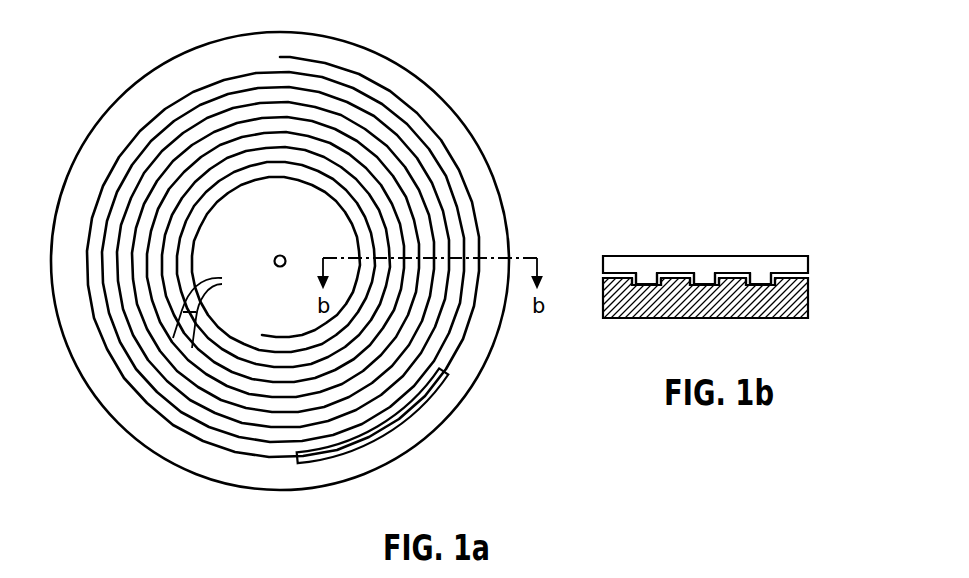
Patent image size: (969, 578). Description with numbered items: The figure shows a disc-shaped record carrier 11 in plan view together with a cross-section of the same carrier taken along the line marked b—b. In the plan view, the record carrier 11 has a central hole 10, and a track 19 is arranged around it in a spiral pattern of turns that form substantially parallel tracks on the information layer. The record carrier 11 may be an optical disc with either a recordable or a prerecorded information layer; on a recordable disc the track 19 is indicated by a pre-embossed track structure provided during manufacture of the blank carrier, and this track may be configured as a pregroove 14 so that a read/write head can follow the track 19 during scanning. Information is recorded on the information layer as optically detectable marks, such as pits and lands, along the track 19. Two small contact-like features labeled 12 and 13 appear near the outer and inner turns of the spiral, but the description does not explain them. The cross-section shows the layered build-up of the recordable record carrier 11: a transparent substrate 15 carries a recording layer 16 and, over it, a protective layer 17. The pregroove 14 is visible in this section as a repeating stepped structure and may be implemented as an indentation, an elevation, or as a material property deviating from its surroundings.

In FIG. 1a, the central hole 10 is at (278, 255).
In FIG. 1a, the record carrier 11 is at (483, 93).
In FIG. 1b, the record carrier 11 is at (605, 231).
In FIG. 1a, the outer terminal contact 12 is at (300, 464).
In FIG. 1a, the inner terminal contact 13 is at (211, 308).
In FIG. 1b, the pregroove 14 is at (702, 288).
In FIG. 1b, the transparent substrate 15 is at (625, 318).
In FIG. 1b, the recording layer 16 is at (784, 270).
In FIG. 1b, the protective layer 17 is at (696, 256).
In FIG. 1a, the track 19 is at (155, 414).